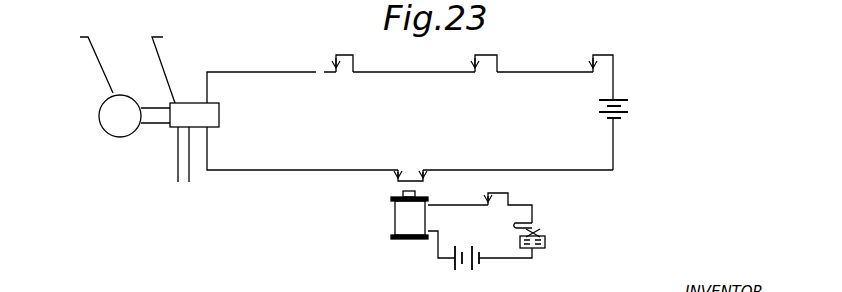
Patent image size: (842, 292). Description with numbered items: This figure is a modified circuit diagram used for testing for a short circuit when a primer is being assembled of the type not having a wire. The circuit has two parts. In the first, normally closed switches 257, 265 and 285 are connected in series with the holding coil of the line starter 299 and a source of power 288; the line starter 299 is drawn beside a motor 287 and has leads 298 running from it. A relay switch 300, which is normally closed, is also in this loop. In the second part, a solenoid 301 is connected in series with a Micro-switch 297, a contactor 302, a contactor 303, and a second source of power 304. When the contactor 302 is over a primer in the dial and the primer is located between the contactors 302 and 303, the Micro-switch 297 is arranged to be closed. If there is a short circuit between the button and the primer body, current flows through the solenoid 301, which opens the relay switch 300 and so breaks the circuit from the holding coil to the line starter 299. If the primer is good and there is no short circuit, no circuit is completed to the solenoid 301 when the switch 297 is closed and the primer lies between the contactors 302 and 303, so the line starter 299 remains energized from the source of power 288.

The motor 287 is at (105, 133).
The line starter 299 is at (220, 117).
The line starter leads 298 is at (183, 187).
The normally closed switch 257 is at (341, 51).
The normally closed switch 265 is at (488, 50).
The normally closed switch 285 is at (604, 50).
The source of power 288 is at (632, 108).
The relay switch 300 is at (413, 166).
The solenoid 301 is at (389, 219).
The Micro-switch 297 is at (498, 188).
The contactor 302 is at (539, 224).
The contactor 303 is at (536, 251).
The source of power 304 is at (475, 273).